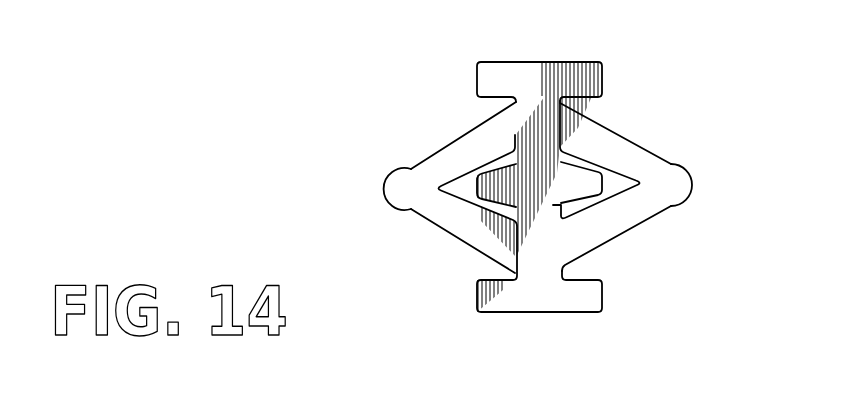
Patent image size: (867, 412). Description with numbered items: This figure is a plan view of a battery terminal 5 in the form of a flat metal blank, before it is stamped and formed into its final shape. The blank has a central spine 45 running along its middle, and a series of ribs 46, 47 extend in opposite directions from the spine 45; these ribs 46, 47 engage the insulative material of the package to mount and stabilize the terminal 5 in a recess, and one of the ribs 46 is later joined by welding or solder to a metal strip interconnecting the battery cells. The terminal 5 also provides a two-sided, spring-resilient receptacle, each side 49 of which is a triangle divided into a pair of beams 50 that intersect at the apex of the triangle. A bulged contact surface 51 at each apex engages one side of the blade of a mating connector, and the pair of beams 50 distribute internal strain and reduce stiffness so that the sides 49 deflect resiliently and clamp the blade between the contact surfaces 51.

The battery terminal 5 is at (442, 148).
The central spine 45 is at (535, 237).
The rib 46 is at (477, 69).
The rib 47 is at (480, 187).
The side of the receptacle 49 is at (463, 239).
The beam 50 is at (463, 134).
The bulged contact surface 51 is at (386, 187).